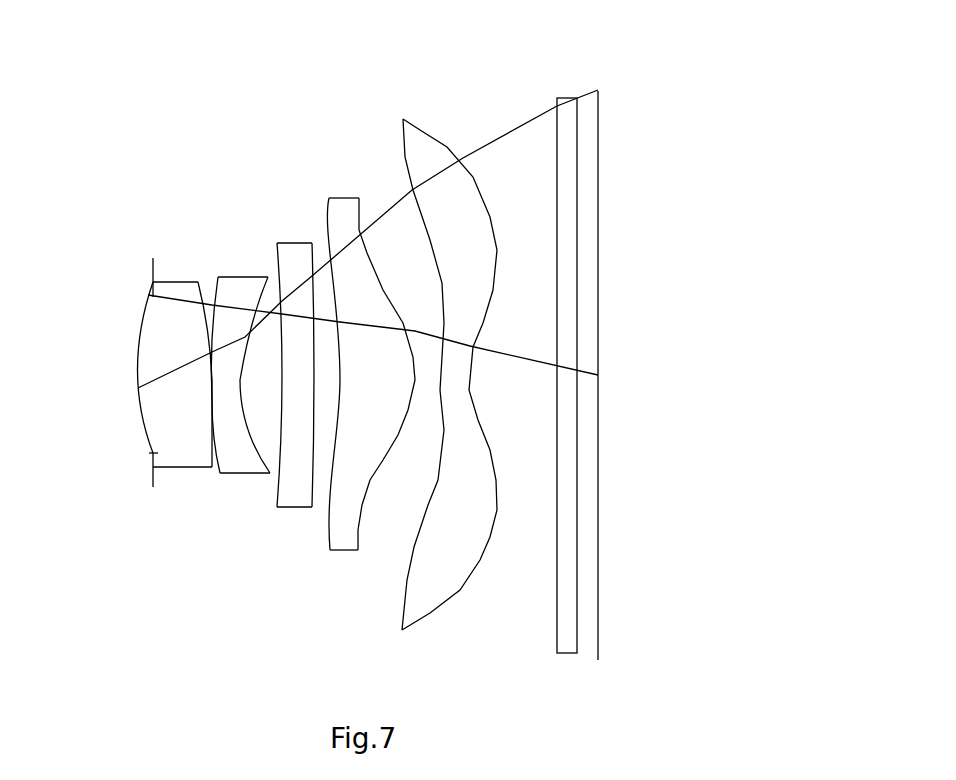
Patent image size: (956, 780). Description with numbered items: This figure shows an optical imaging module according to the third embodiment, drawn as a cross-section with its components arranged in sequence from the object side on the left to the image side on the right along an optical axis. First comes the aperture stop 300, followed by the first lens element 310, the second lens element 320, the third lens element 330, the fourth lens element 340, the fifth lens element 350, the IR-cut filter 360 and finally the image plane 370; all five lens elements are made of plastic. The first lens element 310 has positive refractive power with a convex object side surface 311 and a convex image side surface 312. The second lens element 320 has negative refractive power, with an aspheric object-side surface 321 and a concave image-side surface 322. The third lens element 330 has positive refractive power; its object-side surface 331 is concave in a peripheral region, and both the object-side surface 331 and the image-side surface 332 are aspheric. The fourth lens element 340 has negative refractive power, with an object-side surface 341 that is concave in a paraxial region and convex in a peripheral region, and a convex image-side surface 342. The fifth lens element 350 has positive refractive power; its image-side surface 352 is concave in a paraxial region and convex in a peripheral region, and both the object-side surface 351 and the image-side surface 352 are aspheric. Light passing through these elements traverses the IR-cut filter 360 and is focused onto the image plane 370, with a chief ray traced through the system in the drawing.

The aperture stop 300 is at (153, 268).
The first lens element 310 is at (151, 354).
The object side surface of the first lens element 311 is at (145, 417).
The image side surface of the first lens element 312 is at (207, 422).
The second lens element 320 is at (218, 379).
The object-side surface of the second lens element 321 is at (215, 460).
The image-side surface of the second lens element 322 is at (250, 430).
The third lens element 330 is at (276, 368).
The object-side surface of the third lens element 331 is at (280, 485).
The image-side surface of the third lens element 332 is at (314, 457).
The fourth lens element 340 is at (342, 375).
The object-side surface of the fourth lens element 341 is at (325, 520).
The image-side surface of the fourth lens element 342 is at (357, 537).
The fifth lens element 350 is at (423, 369).
The object-side surface of the fifth lens element 351 is at (410, 570).
The image-side surface of the fifth lens element 352 is at (475, 580).
The IR-cut filter 360 is at (573, 96).
The image plane 370 is at (600, 130).